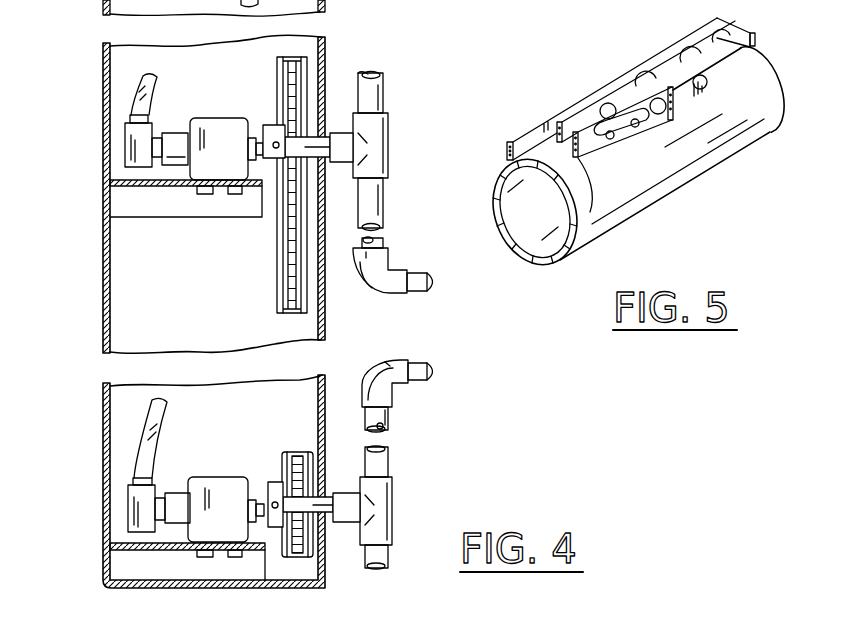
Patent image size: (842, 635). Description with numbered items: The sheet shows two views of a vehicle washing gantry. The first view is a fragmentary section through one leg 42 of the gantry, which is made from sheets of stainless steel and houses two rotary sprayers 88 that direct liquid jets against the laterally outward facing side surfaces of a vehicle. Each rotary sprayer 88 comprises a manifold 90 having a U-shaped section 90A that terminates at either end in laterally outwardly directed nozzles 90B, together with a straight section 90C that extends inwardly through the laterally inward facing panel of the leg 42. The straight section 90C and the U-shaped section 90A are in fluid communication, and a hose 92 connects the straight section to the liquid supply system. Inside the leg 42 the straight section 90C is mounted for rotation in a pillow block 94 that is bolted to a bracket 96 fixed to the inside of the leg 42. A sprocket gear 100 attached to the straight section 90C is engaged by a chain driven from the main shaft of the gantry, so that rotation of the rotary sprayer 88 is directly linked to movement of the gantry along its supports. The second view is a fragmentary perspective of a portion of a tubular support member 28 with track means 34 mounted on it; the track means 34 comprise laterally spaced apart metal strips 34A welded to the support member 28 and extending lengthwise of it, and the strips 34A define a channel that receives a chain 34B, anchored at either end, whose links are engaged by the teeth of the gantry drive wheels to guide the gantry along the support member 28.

In FIG. 5, the support member 28 is at (650, 205).
In FIG. 5, the track means 34 is at (610, 74).
In FIG. 5, the metal strips 34A is at (552, 116).
In FIG. 5, the chain 34B is at (592, 212).
In FIG. 4, the leg 42 is at (103, 73).
In FIG. 4, the rotary sprayer 88 is at (402, 142).
In FIG. 4, the manifold 90 is at (388, 108).
In FIG. 4, the U-shaped section 90A is at (357, 88).
In FIG. 4, the nozzles 90B is at (418, 293).
In FIG. 4, the straight section 90C is at (325, 158).
In FIG. 4, the hose 92 is at (155, 94).
In FIG. 4, the pillow block 94 is at (219, 133).
In FIG. 4, the bracket 96 is at (118, 180).
In FIG. 4, the sprocket gear 100 is at (272, 160).